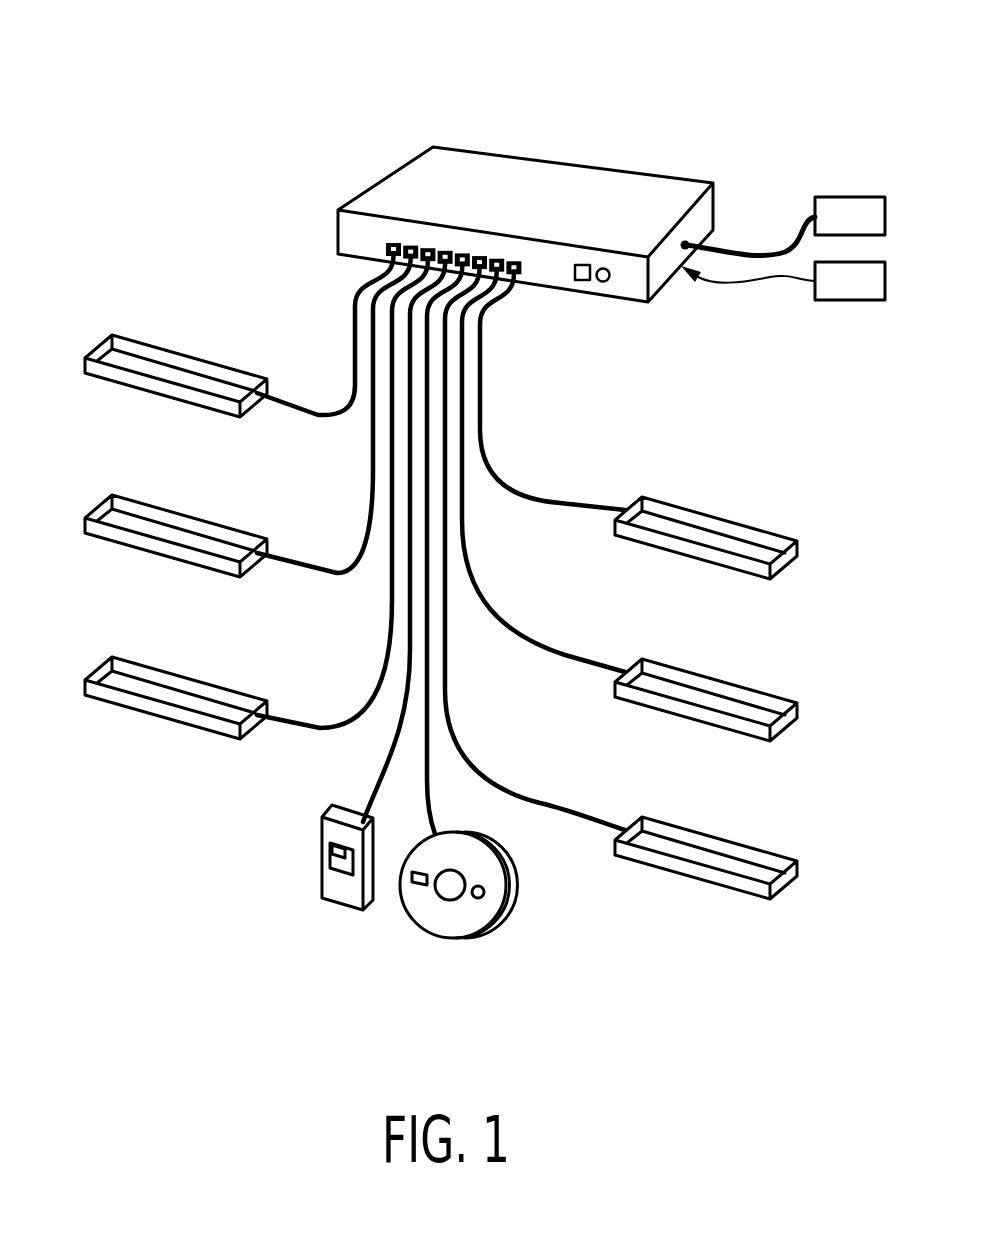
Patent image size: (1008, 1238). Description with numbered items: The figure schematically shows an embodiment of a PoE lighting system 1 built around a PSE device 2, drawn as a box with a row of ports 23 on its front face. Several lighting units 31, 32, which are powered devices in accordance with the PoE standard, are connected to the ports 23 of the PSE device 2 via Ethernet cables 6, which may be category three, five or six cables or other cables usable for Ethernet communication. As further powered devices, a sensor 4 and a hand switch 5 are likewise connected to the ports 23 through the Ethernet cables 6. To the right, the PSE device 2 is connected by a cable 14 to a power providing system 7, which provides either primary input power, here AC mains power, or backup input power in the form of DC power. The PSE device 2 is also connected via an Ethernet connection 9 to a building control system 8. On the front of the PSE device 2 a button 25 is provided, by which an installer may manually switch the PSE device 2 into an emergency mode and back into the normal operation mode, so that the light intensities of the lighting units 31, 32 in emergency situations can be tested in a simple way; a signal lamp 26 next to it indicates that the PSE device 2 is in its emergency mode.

The PoE lighting system 1 is at (199, 93).
The PSE device 2 is at (675, 308).
The sensor 4 is at (432, 903).
The hand switch 5 is at (322, 867).
The Ethernet cables 6 is at (332, 320).
The power providing system 7 is at (866, 197).
The building control system 8 is at (866, 300).
The Ethernet connection 9 is at (783, 279).
The cable 14 is at (790, 200).
The ports 23 is at (389, 224).
The button 25 is at (600, 305).
The signal lamp 26 is at (573, 302).
The lighting units 31 is at (93, 316).
The lighting units 32 is at (91, 478).